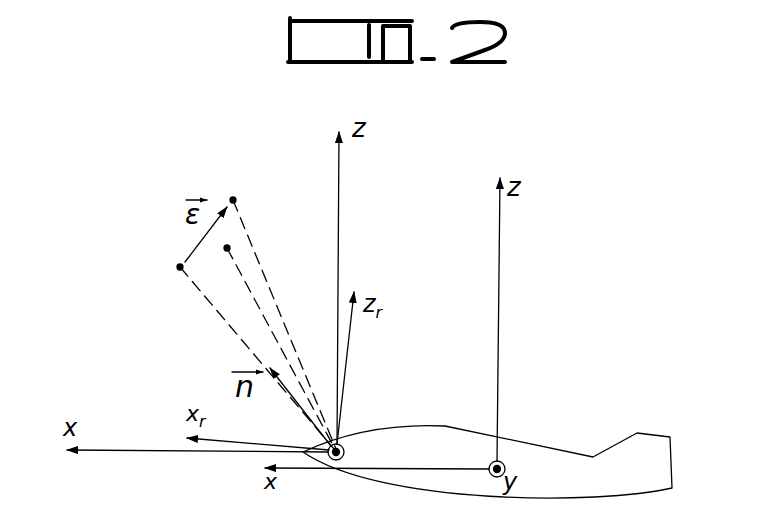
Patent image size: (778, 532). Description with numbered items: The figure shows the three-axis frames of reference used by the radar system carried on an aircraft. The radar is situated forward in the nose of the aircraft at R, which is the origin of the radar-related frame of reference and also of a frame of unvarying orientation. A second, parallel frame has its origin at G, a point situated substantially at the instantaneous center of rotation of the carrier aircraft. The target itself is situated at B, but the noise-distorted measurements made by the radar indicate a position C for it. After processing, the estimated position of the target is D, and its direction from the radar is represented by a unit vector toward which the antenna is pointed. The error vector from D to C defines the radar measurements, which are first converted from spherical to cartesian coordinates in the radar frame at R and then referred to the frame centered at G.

The radar position R is at (350, 449).
The instantaneous center of rotation G is at (509, 457).
The estimated target position D is at (170, 258).
The target position B is at (271, 347).
The measured target position C is at (283, 311).